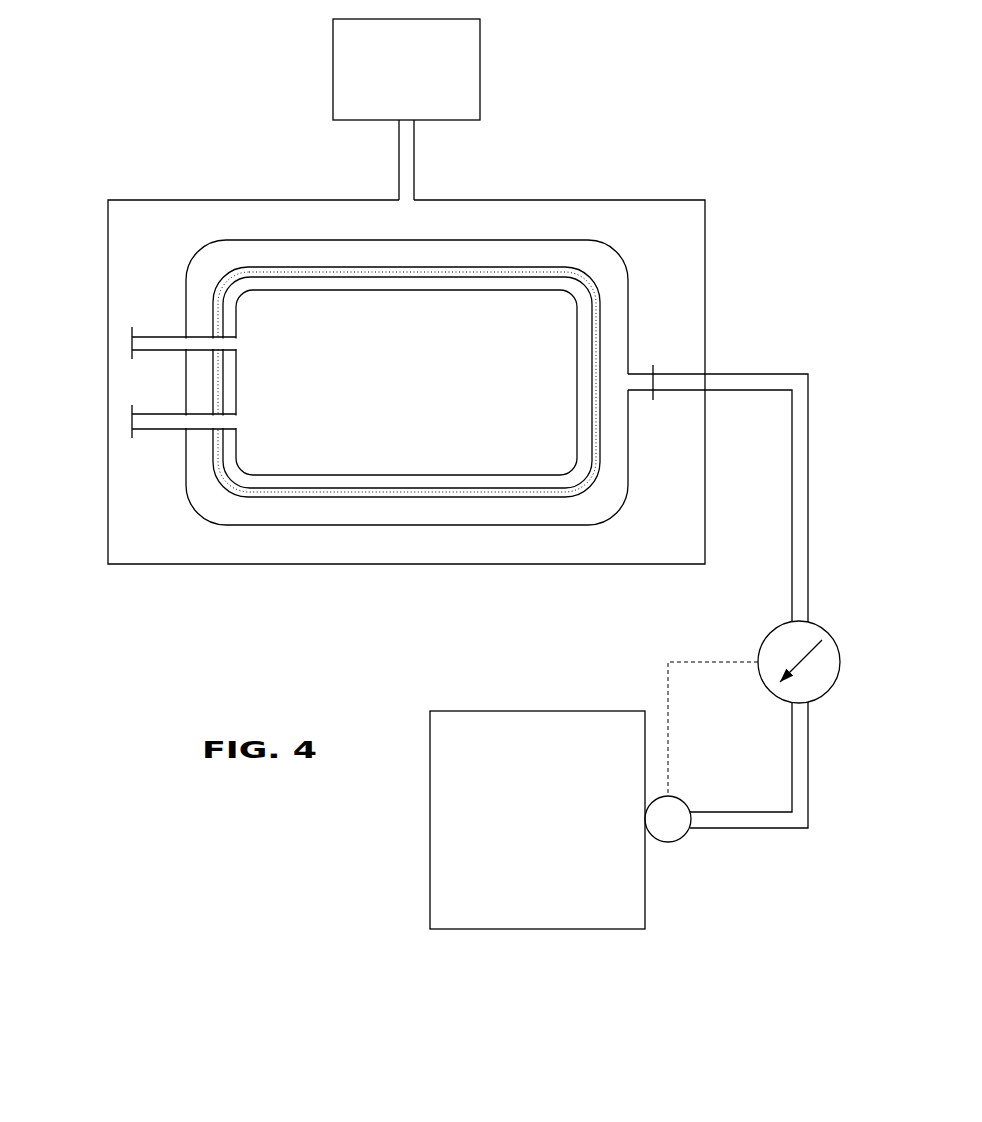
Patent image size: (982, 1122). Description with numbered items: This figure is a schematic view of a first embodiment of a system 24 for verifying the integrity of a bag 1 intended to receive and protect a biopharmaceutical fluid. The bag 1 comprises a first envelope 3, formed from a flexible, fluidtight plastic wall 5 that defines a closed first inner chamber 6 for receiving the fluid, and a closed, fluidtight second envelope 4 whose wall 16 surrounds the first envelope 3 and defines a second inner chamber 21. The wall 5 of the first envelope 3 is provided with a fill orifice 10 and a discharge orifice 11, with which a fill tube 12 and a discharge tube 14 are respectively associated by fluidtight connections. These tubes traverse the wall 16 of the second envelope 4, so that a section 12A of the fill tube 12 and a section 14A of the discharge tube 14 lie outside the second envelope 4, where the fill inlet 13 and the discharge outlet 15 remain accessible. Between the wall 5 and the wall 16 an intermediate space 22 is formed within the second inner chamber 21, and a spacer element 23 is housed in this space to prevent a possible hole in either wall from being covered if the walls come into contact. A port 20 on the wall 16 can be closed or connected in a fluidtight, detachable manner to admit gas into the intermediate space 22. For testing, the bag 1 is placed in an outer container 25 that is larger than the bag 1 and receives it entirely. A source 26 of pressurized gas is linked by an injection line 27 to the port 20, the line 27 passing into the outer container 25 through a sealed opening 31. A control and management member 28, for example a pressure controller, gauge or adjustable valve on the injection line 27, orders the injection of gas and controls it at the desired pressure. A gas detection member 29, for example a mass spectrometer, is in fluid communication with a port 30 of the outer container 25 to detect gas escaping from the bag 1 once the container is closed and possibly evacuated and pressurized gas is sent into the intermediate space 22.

The bag 1 is at (404, 383).
The first envelope 3 is at (578, 360).
The second envelope 4 is at (630, 452).
The wall 5 is at (390, 477).
The first inner chamber 6 is at (479, 456).
The fill orifice 10 is at (243, 340).
The discharge orifice 11 is at (243, 427).
The fill tube 12 is at (213, 337).
The section of fill tube 12A is at (182, 321).
The fill inlet 13 is at (131, 337).
The discharge tube 14 is at (213, 425).
The section of discharge tube 14A is at (182, 440).
The discharge outlet 15 is at (131, 431).
The wall 16 is at (630, 287).
The port 20 is at (638, 381).
The second inner chamber 21 is at (323, 509).
The intermediate space 22 is at (539, 507).
The spacer element 23 is at (527, 270).
The system 24 is at (575, 98).
The outer container 25 is at (172, 565).
The source of pressurized gas 26 is at (537, 820).
The injection line 27 is at (802, 532).
The control and management member 28 is at (815, 682).
The gas detection member 29 is at (463, 42).
The port 30 is at (407, 170).
The sealed opening 31 is at (653, 630).